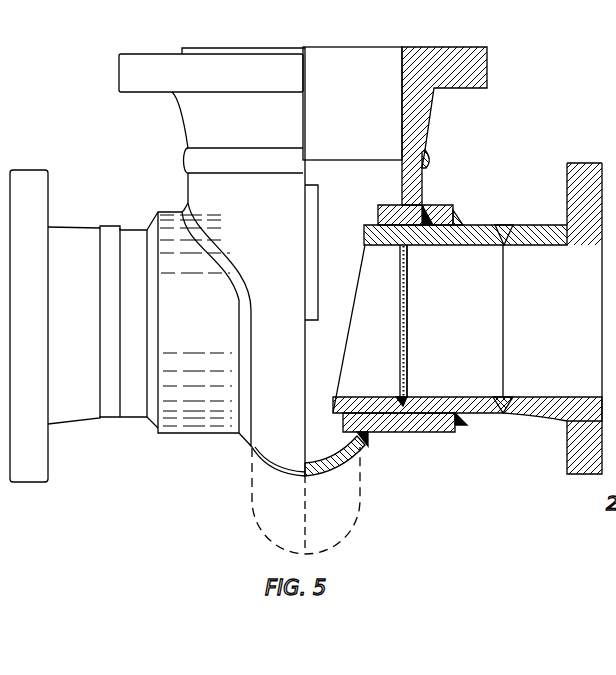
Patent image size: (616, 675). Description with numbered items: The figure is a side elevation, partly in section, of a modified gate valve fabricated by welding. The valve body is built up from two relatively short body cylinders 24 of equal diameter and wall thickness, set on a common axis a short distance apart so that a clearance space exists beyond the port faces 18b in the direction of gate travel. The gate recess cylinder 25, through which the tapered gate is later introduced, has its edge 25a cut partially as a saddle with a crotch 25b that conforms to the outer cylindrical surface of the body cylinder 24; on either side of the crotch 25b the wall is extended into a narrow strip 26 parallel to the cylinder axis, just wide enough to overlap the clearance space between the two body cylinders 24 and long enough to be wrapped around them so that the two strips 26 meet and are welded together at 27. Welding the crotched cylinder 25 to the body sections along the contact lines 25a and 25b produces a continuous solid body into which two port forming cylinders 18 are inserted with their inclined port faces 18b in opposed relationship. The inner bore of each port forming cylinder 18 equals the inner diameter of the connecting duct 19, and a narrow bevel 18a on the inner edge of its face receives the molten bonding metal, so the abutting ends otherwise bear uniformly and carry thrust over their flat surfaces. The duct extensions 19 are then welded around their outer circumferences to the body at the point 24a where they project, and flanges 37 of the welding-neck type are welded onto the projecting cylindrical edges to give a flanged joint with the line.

The port forming cylinder 18 is at (467, 323).
The narrow bevel 18a is at (402, 395).
The port face 18b is at (365, 240).
The connecting duct 19 is at (275, 325).
The body cylinder 24 is at (403, 448).
The weld point 24a is at (155, 428).
The gate recess cylinder 25 is at (437, 183).
The edge of gate recess cylinder 25a is at (252, 370).
The crotch 25b is at (192, 211).
The narrow strip 26 is at (306, 500).
The weld 27 is at (305, 462).
The flange 37 is at (306, 322).